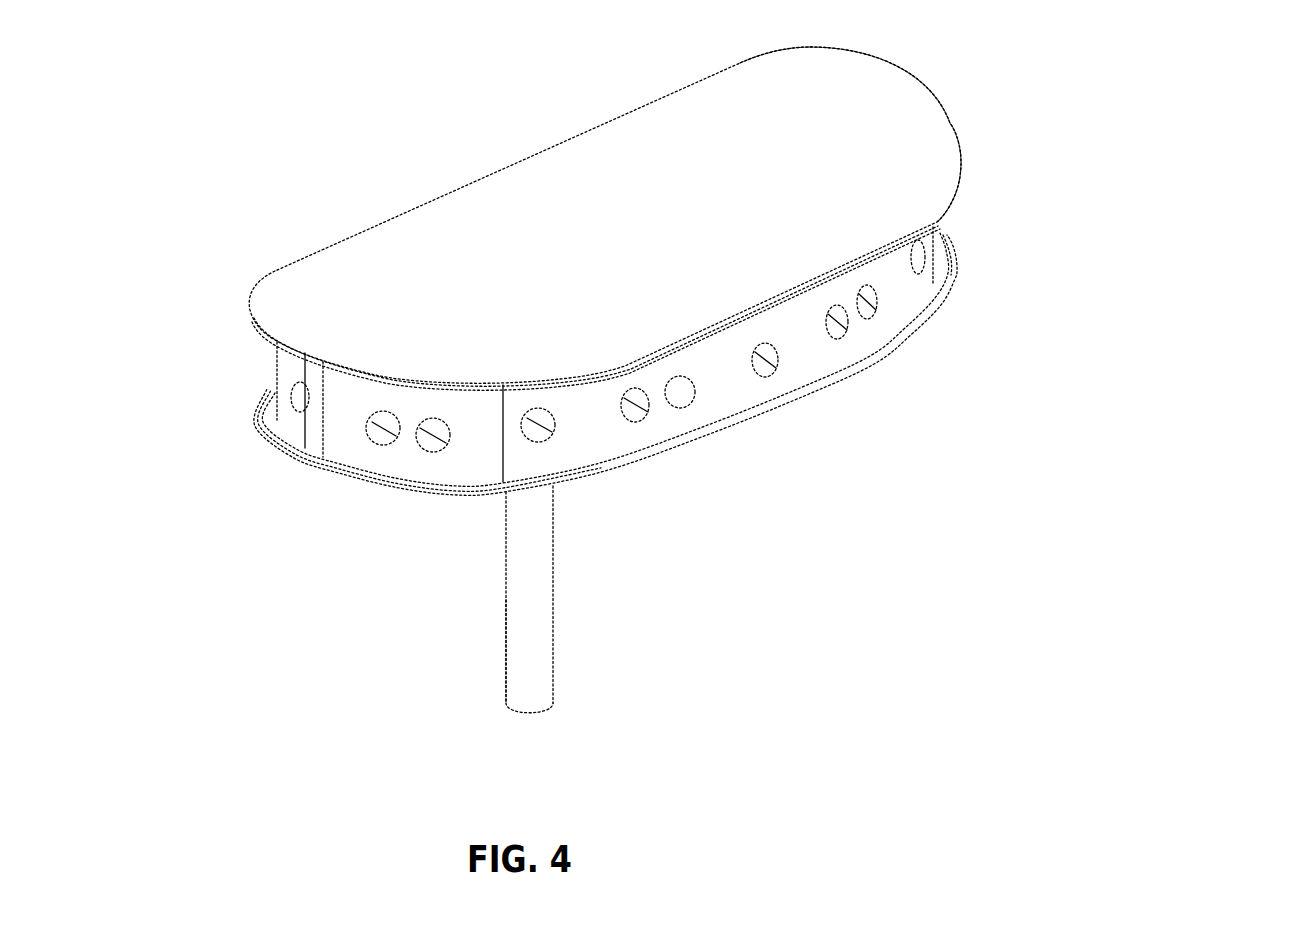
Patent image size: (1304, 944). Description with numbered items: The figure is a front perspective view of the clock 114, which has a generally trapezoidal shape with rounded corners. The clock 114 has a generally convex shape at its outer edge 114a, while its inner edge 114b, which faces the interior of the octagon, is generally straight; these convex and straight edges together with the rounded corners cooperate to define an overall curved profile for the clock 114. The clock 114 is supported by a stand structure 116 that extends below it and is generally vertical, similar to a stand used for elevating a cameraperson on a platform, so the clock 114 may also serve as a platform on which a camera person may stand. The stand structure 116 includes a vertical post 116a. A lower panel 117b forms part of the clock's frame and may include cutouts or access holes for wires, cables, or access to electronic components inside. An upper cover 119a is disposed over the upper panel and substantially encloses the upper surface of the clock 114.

The clock 114 is at (718, 403).
The outer edge 114a is at (937, 225).
The inner edge 114b is at (410, 212).
The stand structure 116 is at (648, 634).
The vertical post 116a is at (535, 607).
The lower panel 117b is at (910, 333).
The upper cover 119a is at (940, 175).